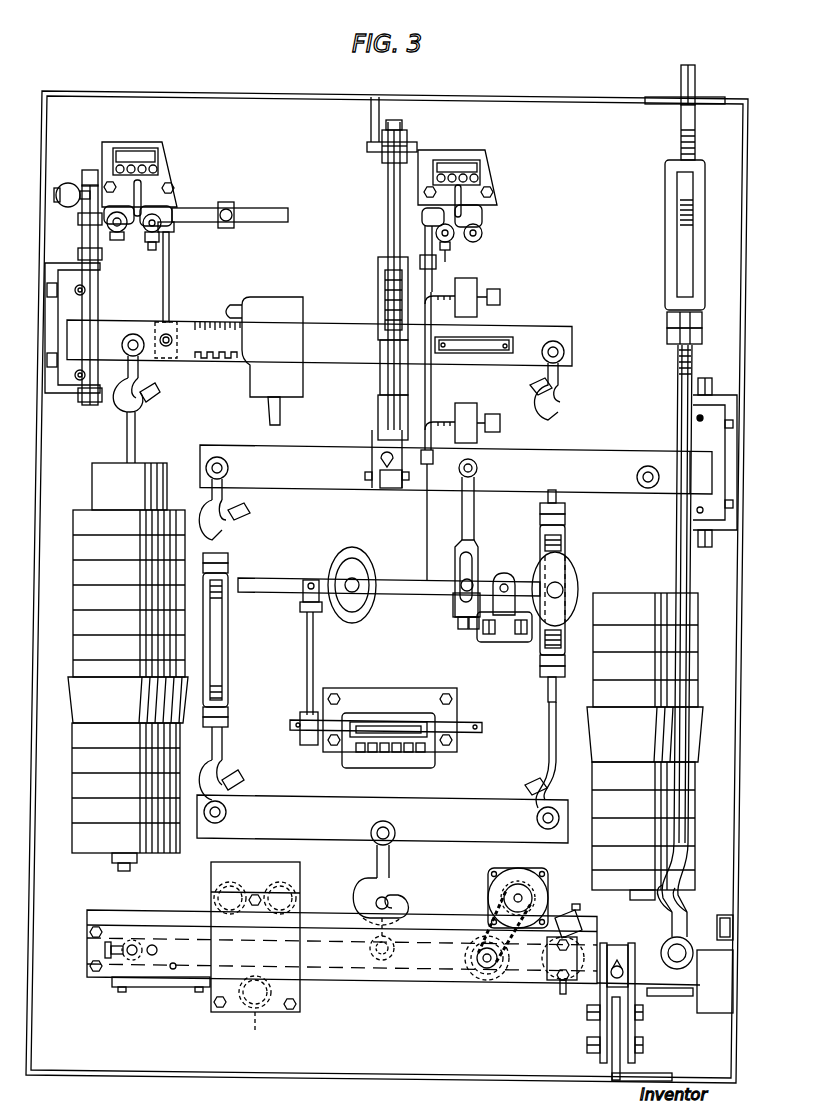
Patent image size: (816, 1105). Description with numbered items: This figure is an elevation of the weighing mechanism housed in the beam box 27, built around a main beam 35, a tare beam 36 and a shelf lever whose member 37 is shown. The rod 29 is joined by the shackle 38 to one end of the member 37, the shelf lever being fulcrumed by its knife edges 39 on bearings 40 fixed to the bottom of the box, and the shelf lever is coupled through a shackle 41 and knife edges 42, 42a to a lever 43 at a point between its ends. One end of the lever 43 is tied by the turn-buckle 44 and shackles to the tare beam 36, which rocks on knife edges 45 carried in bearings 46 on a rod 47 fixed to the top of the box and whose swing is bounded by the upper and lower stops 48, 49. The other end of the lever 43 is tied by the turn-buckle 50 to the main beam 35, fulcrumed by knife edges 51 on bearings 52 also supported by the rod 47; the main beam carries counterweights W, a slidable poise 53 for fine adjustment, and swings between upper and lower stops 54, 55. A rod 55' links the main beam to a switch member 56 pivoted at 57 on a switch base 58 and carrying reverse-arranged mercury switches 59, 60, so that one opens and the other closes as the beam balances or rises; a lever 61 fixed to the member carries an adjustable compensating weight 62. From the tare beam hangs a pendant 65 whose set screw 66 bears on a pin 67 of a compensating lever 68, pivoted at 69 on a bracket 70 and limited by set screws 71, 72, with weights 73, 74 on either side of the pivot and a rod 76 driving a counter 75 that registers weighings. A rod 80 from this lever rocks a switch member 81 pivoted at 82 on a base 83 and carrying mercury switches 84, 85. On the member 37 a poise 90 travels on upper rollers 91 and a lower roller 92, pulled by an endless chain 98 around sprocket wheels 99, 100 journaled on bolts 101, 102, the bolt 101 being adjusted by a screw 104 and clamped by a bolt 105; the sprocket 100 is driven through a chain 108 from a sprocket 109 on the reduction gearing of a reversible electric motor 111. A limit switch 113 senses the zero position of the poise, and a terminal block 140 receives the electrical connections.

The housing frame 27 is at (138, 92).
The rod 29 is at (681, 75).
The main beam 35 is at (527, 326).
The tare beam 36 is at (583, 456).
The shelf lever member 37 is at (404, 976).
The shackle 38 is at (688, 916).
The knife edges 39 is at (612, 975).
The bearings 40 is at (612, 950).
The shackle 41 is at (400, 888).
The knife edge 42 is at (368, 950).
The knife edge 42a is at (376, 831).
The lever 43 is at (456, 812).
The turn-buckle 44 is at (228, 656).
The knife edges 45 is at (380, 458).
The bearings 46 is at (394, 482).
The rod 47 is at (388, 228).
The upper stop 48 is at (698, 418).
The lower stop 49 is at (705, 510).
The turn-buckle 50 is at (542, 536).
The knife edges 51 is at (378, 333).
The bearings 52 is at (385, 352).
The slidable poise 53 is at (264, 361).
The upper stop 54 is at (86, 290).
The lower stop 55 is at (73, 311).
The rod 55' is at (183, 290).
The switch member 56 is at (135, 236).
The pivot 57 is at (125, 252).
The switch base 58 is at (110, 165).
The mercury switch 59 is at (102, 190).
The mercury switch 60 is at (160, 213).
The lever 61 is at (278, 215).
The compensating weight 62 is at (226, 202).
The pendant 65 is at (476, 492).
The set screw 66 is at (455, 602).
The pin 67 is at (470, 578).
The compensating lever 68 is at (390, 596).
The pivot 69 is at (503, 586).
The bracket 70 is at (500, 642).
The set screw 71 is at (481, 630).
The set screw 72 is at (519, 640).
The weight 73 is at (345, 558).
The weight 74 is at (572, 570).
The counter 75 is at (362, 758).
The rod 76 is at (307, 665).
The rod 80 is at (427, 500).
The switch member 81 is at (453, 240).
The pivot 82 is at (461, 200).
The switch base 83 is at (498, 170).
The mercury switch 84 is at (420, 216).
The mercury switch 85 is at (483, 215).
The poise 90 is at (236, 1012).
The upper rollers 91 is at (240, 894).
The lower roller 92 is at (260, 1016).
The endless chain 98 is at (173, 970).
The sprocket wheel 99 is at (152, 944).
The sprocket wheel 100 is at (493, 983).
The bolt 101 is at (128, 955).
The bolt 102 is at (483, 965).
The screw 104 is at (127, 942).
The bolt 105 is at (145, 960).
The chain 108 is at (497, 912).
The sprocket 109 is at (526, 892).
The reversible electric motor 111 is at (513, 878).
The limit switch 113 is at (183, 992).
The terminal block 140 is at (705, 990).
The counterweights W is at (74, 616).